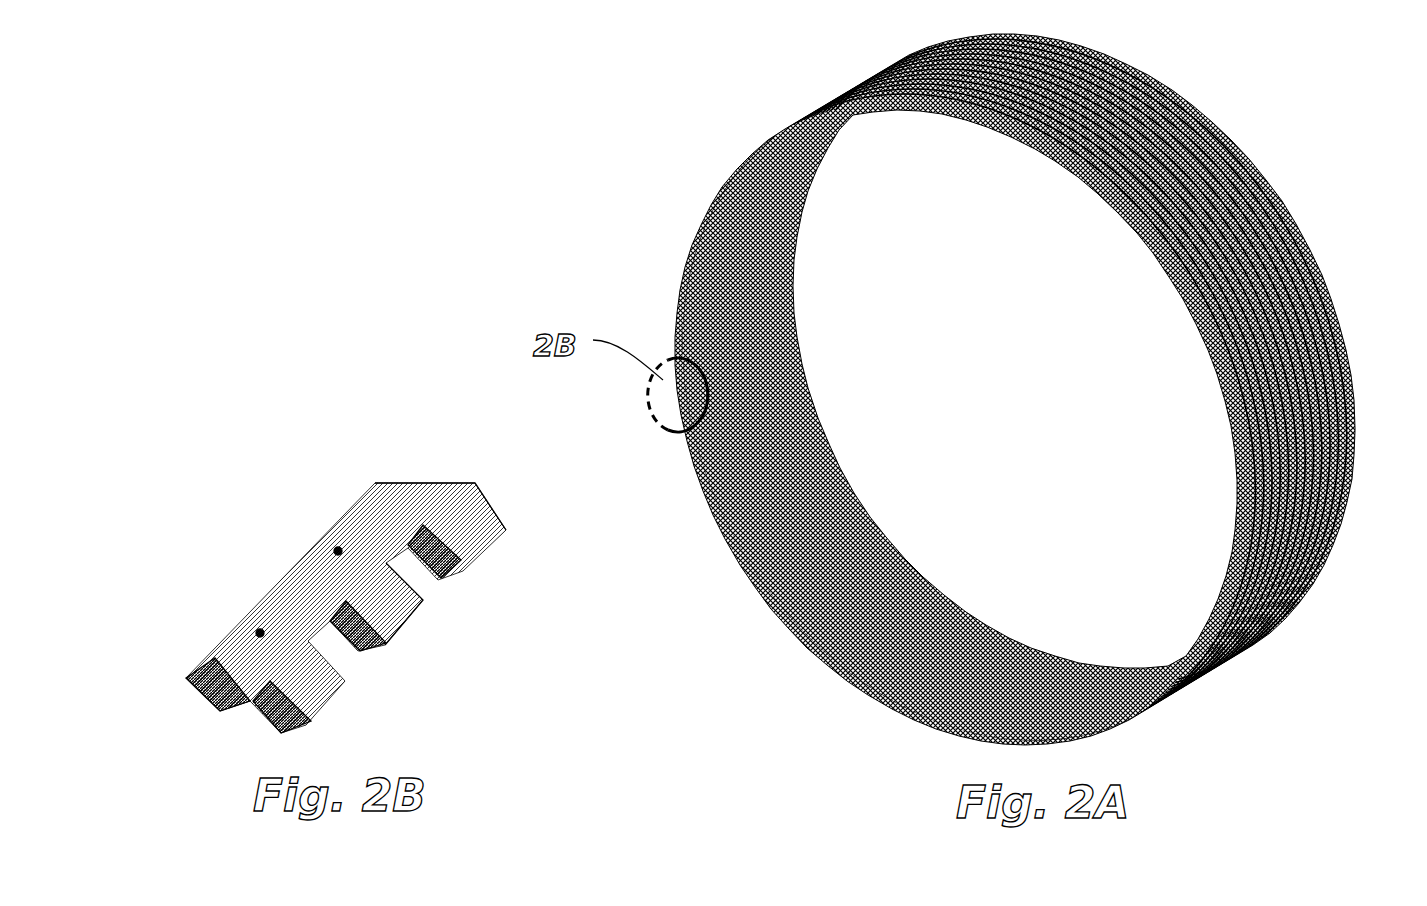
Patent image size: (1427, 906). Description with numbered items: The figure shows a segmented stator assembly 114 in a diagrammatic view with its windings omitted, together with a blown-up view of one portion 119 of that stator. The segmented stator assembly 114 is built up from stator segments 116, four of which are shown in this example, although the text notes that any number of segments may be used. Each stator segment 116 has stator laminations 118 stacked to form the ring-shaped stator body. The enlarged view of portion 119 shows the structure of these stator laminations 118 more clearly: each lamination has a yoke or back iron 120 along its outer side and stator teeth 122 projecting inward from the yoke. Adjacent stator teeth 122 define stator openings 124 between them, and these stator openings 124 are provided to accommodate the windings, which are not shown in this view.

In FIG. 2A, the segmented stator assembly 114 is at (910, 427).
In FIG. 2A, the stator segment 116 is at (852, 68).
In FIG. 2A, the stator lamination 118 is at (1218, 138).
In FIG. 2B, the stator lamination 118 is at (342, 557).
In FIG. 2B, the portion 119 is at (523, 515).
In FIG. 2B, the yoke or back iron 120 is at (235, 663).
In FIG. 2B, the stator tooth 122 is at (383, 602).
In FIG. 2B, the stator opening 124 is at (412, 572).